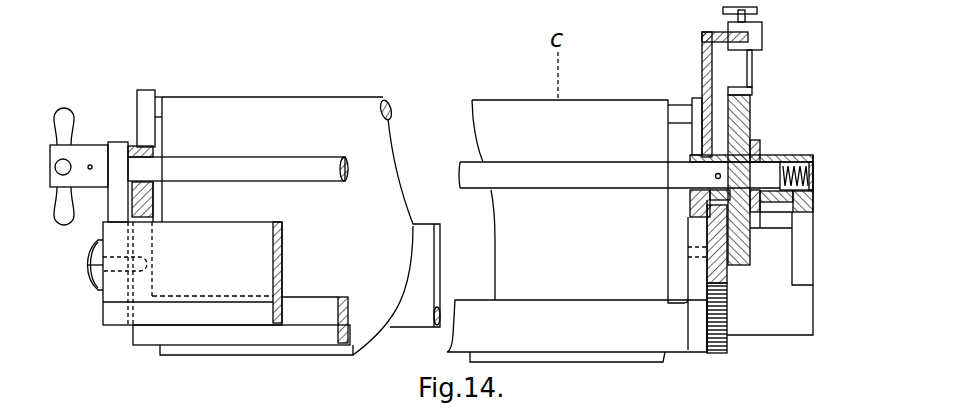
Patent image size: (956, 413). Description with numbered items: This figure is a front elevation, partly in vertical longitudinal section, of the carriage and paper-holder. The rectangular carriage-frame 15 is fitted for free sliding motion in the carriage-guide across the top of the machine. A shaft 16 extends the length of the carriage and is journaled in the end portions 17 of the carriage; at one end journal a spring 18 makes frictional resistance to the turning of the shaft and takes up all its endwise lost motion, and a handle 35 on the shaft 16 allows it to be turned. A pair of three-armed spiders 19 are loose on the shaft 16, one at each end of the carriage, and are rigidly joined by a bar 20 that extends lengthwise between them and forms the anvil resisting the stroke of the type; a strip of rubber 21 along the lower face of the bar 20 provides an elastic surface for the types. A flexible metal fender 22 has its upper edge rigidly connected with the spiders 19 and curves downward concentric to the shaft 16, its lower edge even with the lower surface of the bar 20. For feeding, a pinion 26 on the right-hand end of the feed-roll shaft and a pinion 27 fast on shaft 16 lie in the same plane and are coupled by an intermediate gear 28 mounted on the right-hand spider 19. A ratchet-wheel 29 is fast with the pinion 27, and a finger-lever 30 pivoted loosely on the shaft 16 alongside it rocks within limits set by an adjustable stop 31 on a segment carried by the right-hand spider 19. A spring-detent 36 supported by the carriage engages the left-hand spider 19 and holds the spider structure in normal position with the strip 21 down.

The carriage-frame 15 is at (262, 252).
The shaft 16 is at (218, 170).
The end portions of the carriage 17 is at (118, 152).
The spring 18 is at (806, 180).
The three-armed spiders 19 is at (145, 100).
The bar 20 is at (547, 313).
The strip of rubber 21 is at (345, 340).
The flexible metal fender 22 is at (398, 182).
The pinion 26 is at (727, 308).
The pinion 27 is at (690, 203).
The intermediate gear 28 is at (713, 233).
The ratchet-wheel 29 is at (742, 124).
The finger-lever 30 is at (756, 150).
The adjustable stop 31 is at (762, 38).
The handle 35 is at (64, 114).
The spring-detent 36 is at (96, 264).